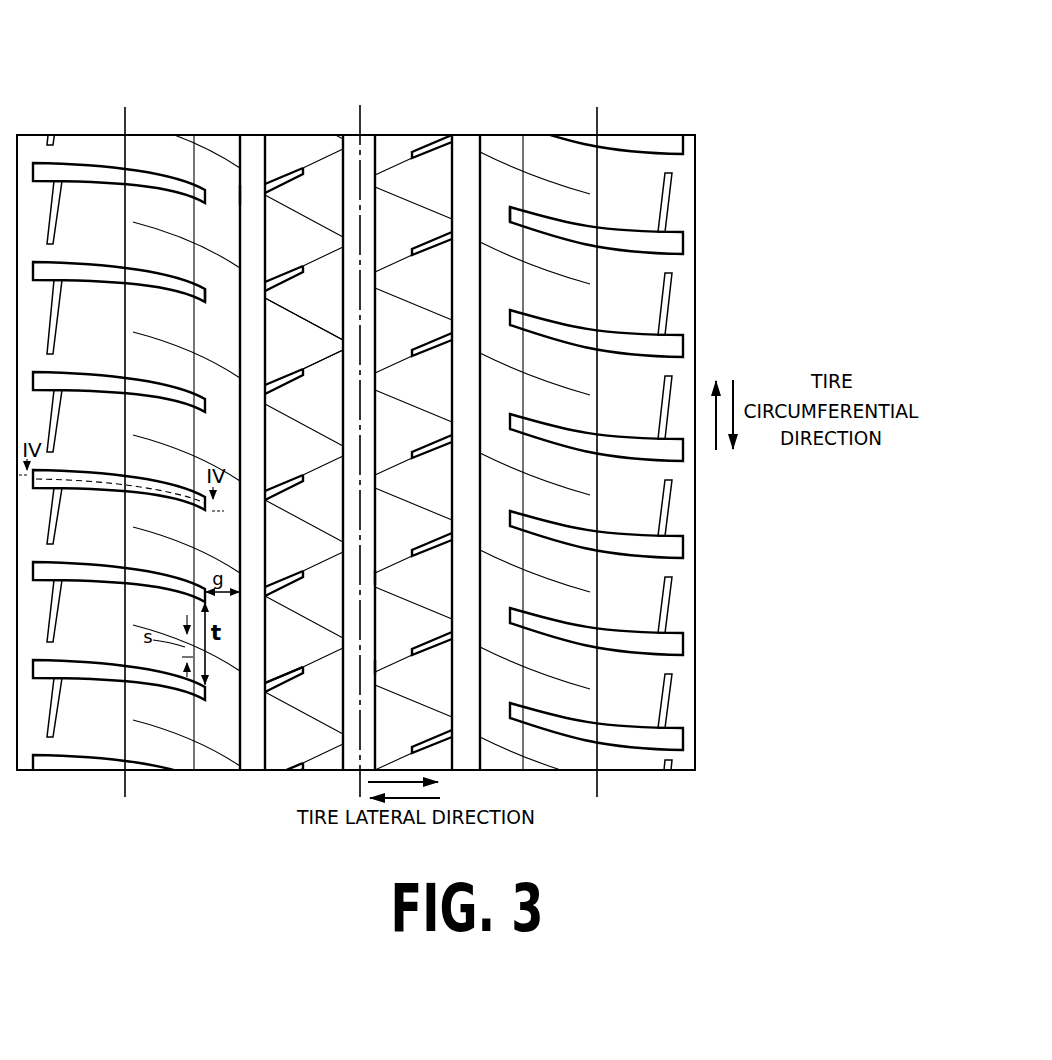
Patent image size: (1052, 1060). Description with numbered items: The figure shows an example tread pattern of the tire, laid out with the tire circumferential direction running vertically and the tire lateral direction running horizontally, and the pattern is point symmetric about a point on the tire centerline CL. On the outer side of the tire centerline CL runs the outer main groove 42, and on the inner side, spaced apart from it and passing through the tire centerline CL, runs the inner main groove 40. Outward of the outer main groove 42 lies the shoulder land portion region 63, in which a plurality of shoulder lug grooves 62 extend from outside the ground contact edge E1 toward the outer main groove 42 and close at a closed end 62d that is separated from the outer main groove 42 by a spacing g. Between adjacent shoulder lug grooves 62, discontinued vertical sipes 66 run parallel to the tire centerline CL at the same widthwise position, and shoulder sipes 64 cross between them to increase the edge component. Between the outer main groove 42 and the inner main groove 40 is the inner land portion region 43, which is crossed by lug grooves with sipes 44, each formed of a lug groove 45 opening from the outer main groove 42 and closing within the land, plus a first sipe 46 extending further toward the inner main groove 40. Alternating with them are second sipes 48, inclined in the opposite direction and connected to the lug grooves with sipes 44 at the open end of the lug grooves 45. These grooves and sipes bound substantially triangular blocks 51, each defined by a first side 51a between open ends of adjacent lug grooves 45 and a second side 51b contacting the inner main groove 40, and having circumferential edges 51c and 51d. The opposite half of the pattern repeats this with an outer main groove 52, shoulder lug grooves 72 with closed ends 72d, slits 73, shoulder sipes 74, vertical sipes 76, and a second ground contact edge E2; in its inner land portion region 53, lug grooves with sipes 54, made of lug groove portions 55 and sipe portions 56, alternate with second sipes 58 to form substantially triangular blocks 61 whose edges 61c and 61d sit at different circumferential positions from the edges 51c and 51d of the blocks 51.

The inner main groove 40 is at (367, 143).
The outer main groove 42 is at (245, 160).
The inner land portion region 43 is at (300, 418).
The lug groove with sipe 44 is at (304, 405).
The lug groove 45 is at (279, 160).
The first sipe 46 is at (323, 425).
The second sipe 48 is at (240, 193).
The substantially triangular block 51 is at (300, 418).
The first side 51a is at (276, 305).
The second side 51b is at (359, 368).
The edge of substantially triangular block 51c is at (267, 598).
The edge of substantially triangular block 51d is at (270, 672).
The outer main groove 52 is at (470, 143).
The inner land portion region 53 is at (416, 391).
The lug groove with sipe 54 is at (420, 406).
The first inclined sipe portion 55 is at (440, 230).
The second inclined sipe portion 56 is at (400, 240).
The second sipe 58 is at (385, 187).
The substantially triangular block 61 is at (426, 405).
The edge of substantially triangular block 61c is at (373, 577).
The edge of substantially triangular block 61d is at (375, 667).
The shoulder lug groove 62 is at (70, 165).
The closed end 62d is at (207, 295).
The shoulder land portion region 63 is at (95, 150).
The shoulder sipe 64 is at (153, 227).
The vertical sipe 66 is at (193, 165).
The shoulder lug groove 72 is at (612, 230).
The inner end of shoulder lug groove 72d is at (512, 210).
The shoulder slit 73 is at (634, 165).
The shoulder sipe 74 is at (565, 190).
The vertical sipe 76 is at (525, 137).
The ground contact edge E1 is at (125, 440).
The second ground contact edge E2 is at (593, 442).
The tire centerline CL is at (358, 442).